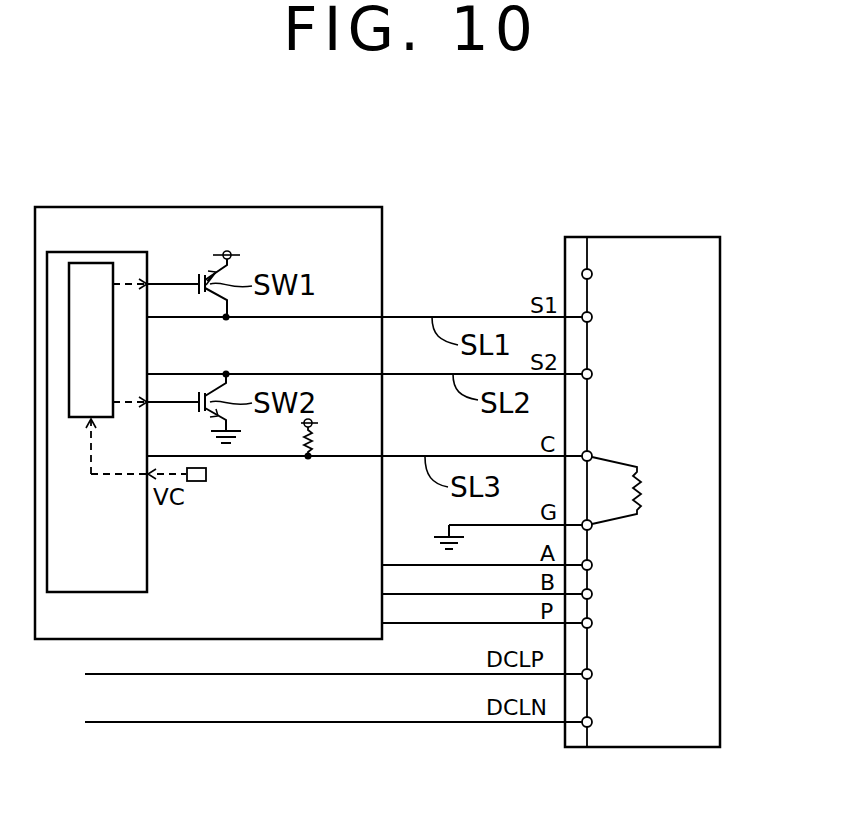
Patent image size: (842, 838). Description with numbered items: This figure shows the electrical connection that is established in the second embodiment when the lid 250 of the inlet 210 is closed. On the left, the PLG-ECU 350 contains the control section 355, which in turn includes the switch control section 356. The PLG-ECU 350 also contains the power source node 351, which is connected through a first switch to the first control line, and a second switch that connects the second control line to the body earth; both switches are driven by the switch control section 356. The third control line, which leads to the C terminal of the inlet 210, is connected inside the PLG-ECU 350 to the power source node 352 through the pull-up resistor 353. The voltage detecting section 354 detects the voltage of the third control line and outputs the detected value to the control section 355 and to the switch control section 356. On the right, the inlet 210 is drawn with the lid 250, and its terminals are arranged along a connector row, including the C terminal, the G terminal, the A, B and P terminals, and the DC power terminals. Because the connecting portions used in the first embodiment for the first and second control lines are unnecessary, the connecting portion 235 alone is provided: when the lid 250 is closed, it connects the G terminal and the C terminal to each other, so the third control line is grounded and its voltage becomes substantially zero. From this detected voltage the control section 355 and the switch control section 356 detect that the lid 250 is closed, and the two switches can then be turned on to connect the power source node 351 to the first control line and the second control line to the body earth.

The PLG-ECU 350 is at (252, 207).
The power source node 351 is at (231, 252).
The power source node 352 is at (316, 421).
The pull-up resistor 353 is at (313, 440).
The voltage detecting section 354 is at (197, 481).
The control section 355 is at (100, 592).
The switch control section 356 is at (80, 417).
The inlet 210 is at (566, 237).
The lid 250 is at (720, 237).
The connecting portion 235 is at (637, 514).